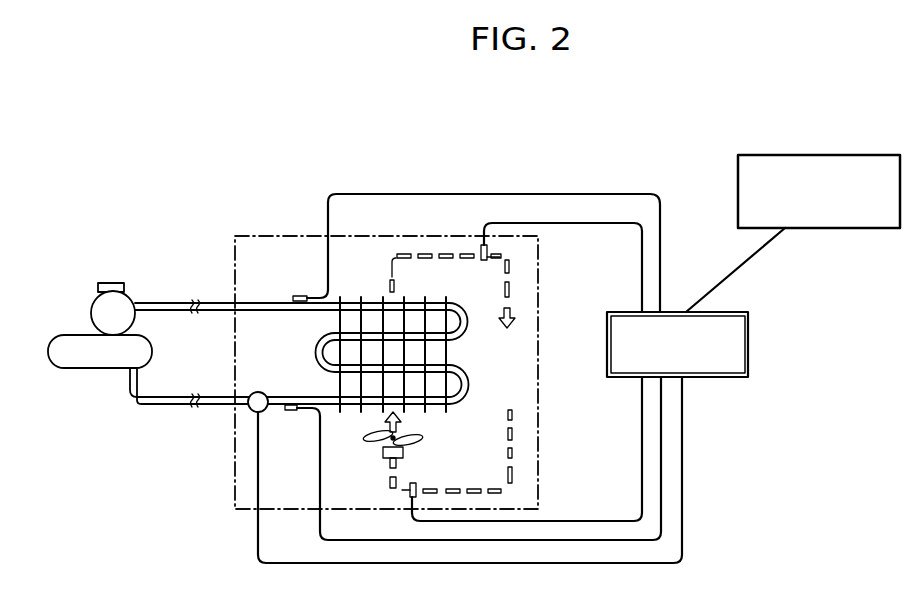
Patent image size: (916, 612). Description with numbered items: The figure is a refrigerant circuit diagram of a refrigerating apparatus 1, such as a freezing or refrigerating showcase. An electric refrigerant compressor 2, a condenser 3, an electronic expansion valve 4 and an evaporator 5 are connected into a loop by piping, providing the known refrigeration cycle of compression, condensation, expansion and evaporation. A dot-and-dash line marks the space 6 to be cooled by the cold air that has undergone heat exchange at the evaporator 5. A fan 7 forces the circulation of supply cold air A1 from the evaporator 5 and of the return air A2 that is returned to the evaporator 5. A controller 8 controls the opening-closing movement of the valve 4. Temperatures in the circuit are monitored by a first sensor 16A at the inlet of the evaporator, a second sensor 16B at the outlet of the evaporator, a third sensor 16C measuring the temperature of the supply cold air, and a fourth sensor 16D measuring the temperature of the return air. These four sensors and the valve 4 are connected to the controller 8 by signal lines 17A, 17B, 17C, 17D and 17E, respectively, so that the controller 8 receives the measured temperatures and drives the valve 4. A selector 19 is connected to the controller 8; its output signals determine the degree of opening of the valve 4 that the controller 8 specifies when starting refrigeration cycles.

The refrigerating apparatus 1 is at (261, 220).
The electric refrigerant compressor 2 is at (90, 313).
The condenser 3 is at (76, 370).
The electronic expansion valve 4 is at (249, 410).
The evaporator 5 is at (318, 337).
The space to be cooled 6 is at (309, 235).
The fan 7 is at (383, 453).
The controller 8 is at (734, 310).
The selector 19 is at (818, 155).
The first sensor 16A is at (296, 413).
The second sensor 16B is at (300, 296).
The third sensor 16C is at (481, 247).
The fourth sensor 16D is at (405, 491).
The signal line 17A is at (530, 543).
The signal line 17B is at (522, 194).
The signal line 17C is at (572, 225).
The signal line 17D is at (577, 521).
The signal line 17E is at (256, 535).
The supply cold air A1 is at (514, 291).
The return air A2 is at (516, 475).